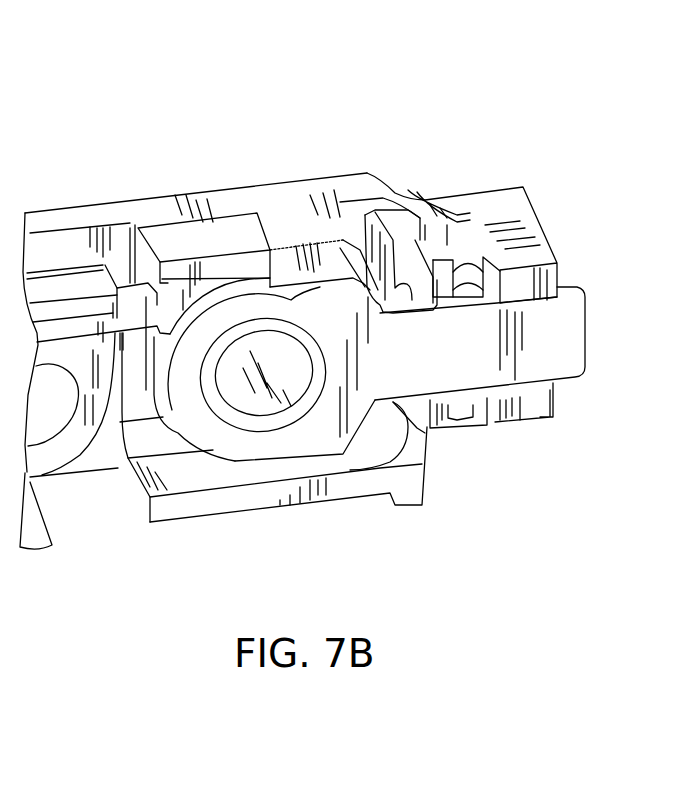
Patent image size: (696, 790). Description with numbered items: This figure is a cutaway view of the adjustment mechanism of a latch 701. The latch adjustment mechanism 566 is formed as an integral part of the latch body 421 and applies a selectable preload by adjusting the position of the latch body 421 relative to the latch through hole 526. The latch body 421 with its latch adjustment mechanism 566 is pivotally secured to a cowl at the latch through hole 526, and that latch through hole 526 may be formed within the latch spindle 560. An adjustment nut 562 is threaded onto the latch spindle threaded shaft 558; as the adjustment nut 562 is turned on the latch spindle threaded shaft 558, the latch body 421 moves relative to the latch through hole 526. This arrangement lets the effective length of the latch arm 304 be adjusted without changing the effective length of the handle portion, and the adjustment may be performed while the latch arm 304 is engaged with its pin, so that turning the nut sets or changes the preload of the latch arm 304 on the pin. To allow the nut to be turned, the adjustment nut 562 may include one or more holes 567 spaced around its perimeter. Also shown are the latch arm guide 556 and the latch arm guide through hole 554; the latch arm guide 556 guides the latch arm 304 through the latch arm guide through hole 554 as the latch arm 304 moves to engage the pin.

The latch 701 is at (503, 87).
The latch arm guide through hole 554 is at (73, 283).
The latch arm guide 556 is at (182, 238).
The latch spindle 560 is at (312, 250).
The holes 567 is at (463, 270).
The latch body 421 is at (517, 213).
The latch adjustment mechanism 566 is at (600, 105).
The latch spindle threaded shaft 558 is at (565, 367).
The adjustment nut 562 is at (433, 423).
The latch through hole 526 is at (258, 403).
The latch arm 304 is at (65, 440).